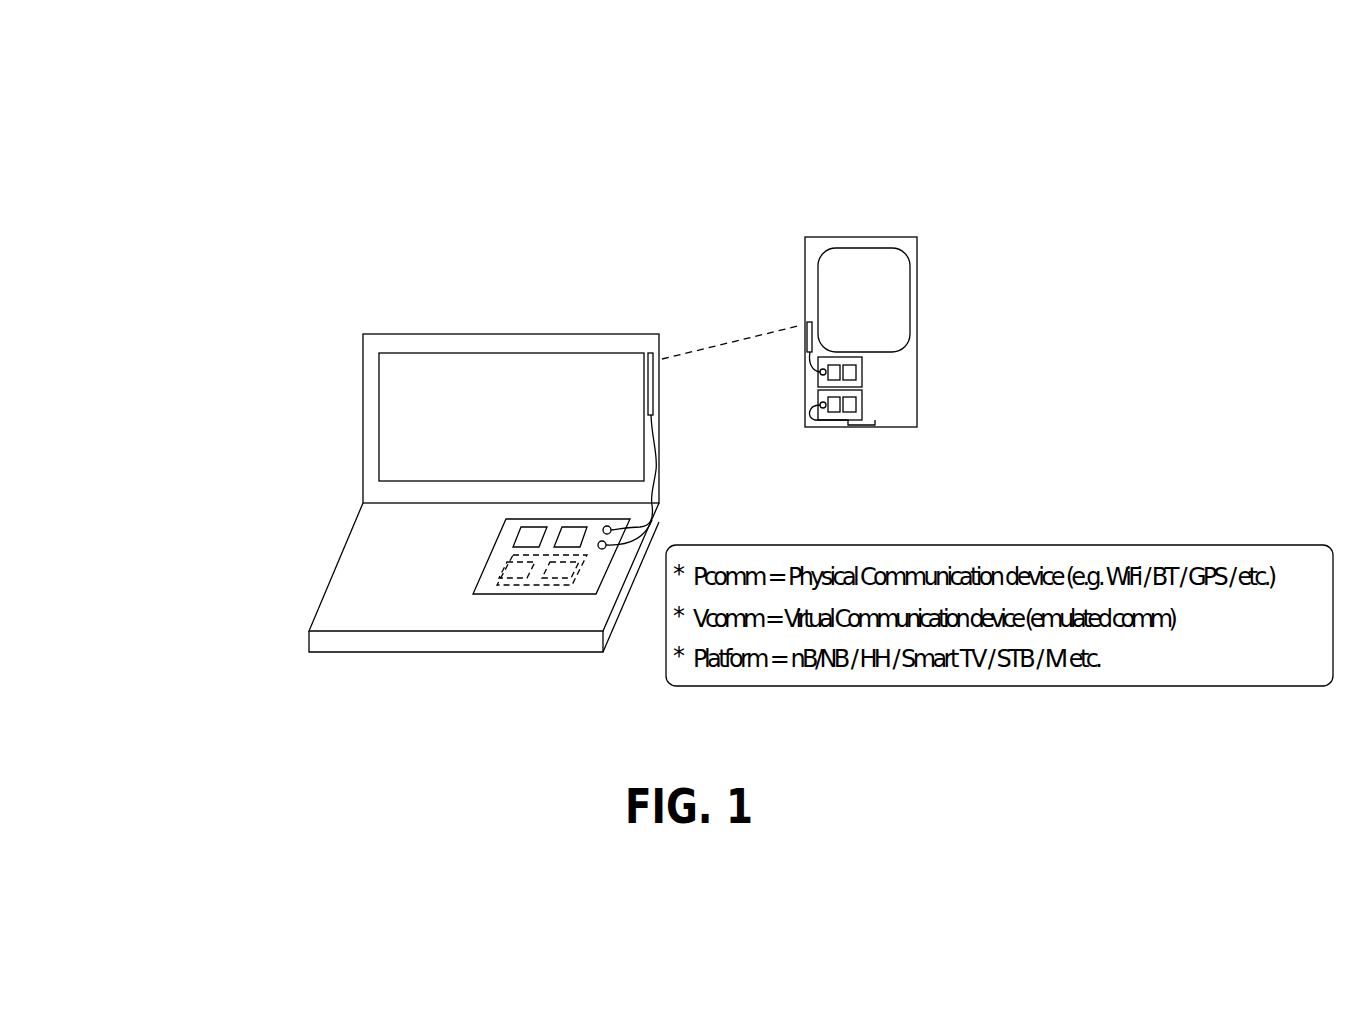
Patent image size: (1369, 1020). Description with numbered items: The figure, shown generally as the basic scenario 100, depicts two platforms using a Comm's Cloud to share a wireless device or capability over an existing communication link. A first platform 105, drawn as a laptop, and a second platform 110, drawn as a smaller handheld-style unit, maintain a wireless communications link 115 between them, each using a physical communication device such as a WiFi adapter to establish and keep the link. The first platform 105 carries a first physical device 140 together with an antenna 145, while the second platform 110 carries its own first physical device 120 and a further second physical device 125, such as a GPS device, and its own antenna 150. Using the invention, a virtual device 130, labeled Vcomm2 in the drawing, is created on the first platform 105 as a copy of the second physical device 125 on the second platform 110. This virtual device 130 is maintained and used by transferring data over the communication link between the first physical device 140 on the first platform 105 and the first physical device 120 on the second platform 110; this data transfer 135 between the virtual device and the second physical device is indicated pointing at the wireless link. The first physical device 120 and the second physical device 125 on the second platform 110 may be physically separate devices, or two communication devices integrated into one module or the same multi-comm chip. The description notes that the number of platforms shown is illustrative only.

The basic scenario 100 is at (1132, 178).
The platform no. 1 105 is at (438, 325).
The platform no. 2 110 is at (862, 237).
The wireless communications link 115 is at (722, 337).
The device no. 1 on platform no. 2 120 is at (885, 367).
The device no. 2 on platform no. 2 125 is at (877, 403).
The virtual device 130 is at (487, 587).
The data transfer between Vcomm2 and Pcomm2 135 is at (755, 348).
The device no. 1 on platform no. 1 140 is at (498, 530).
The antenna for platform no. 1 145 is at (650, 350).
The antenna for platform no. 2 150 is at (807, 320).